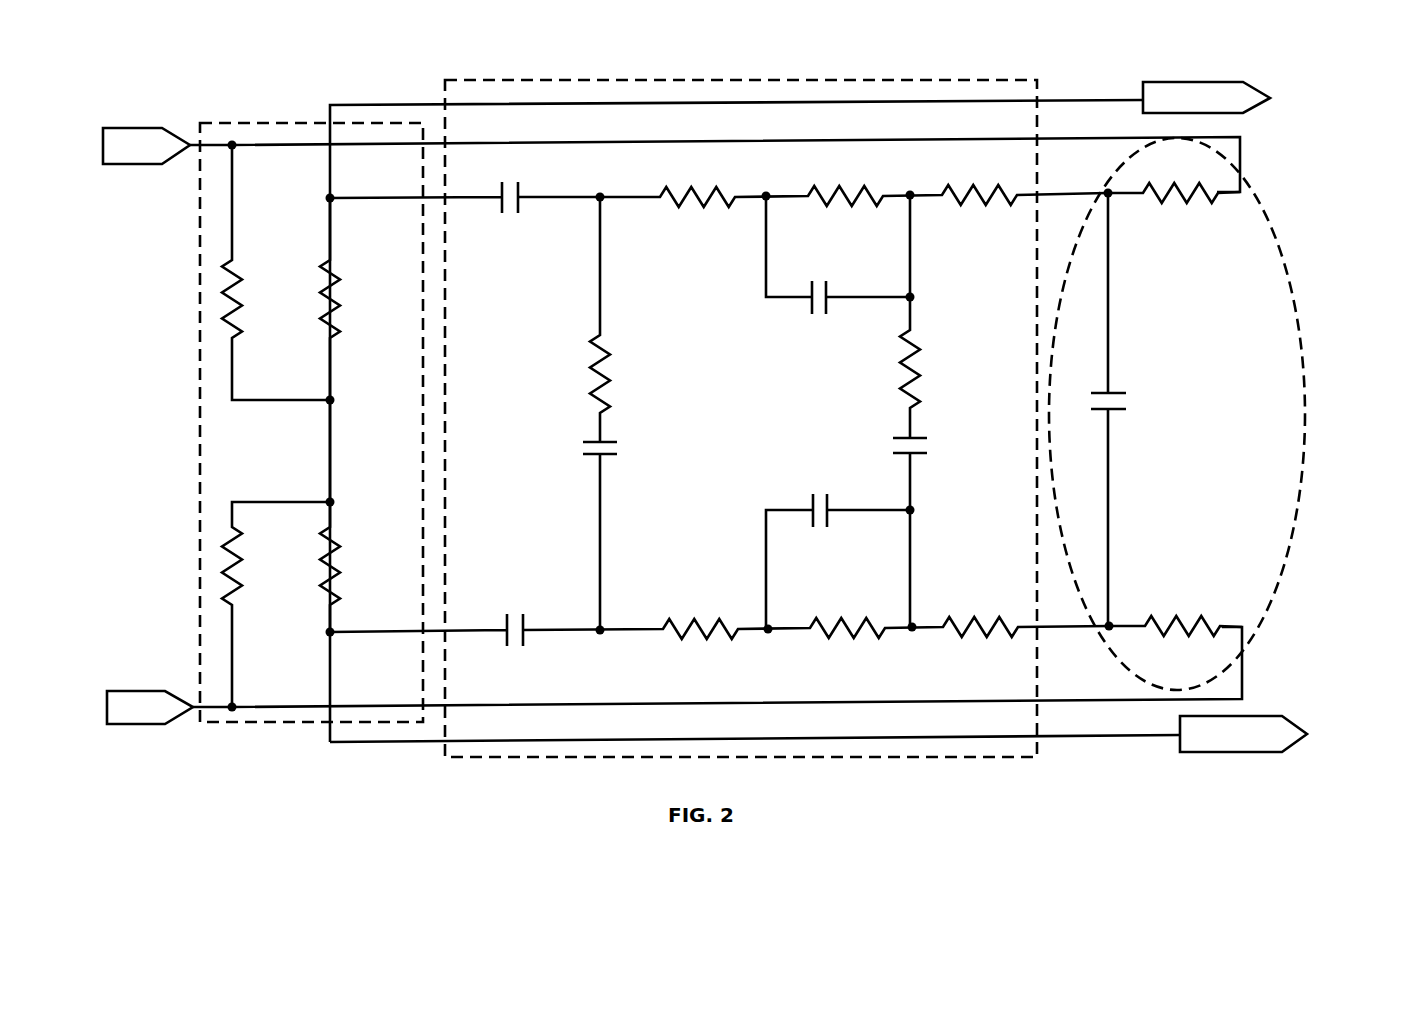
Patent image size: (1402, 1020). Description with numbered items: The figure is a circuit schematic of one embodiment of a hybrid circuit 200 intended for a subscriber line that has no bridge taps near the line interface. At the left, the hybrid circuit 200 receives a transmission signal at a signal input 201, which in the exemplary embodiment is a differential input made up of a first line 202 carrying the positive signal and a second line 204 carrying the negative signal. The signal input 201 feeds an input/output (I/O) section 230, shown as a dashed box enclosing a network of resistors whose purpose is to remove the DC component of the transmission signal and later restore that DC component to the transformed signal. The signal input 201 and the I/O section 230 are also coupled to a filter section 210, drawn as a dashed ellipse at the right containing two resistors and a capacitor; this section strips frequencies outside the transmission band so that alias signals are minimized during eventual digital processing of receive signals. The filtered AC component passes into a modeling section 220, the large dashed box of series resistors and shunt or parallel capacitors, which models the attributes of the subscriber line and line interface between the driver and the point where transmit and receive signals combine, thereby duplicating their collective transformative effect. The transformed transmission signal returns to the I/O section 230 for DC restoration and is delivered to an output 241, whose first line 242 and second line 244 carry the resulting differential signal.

The hybrid circuit 200 is at (256, 803).
The signal input 201 is at (152, 374).
The first line 202 is at (150, 128).
The second line 204 is at (133, 725).
The filter section 210 is at (1281, 241).
The modeling section 220 is at (703, 82).
The input/output (I/O) section 230 is at (238, 123).
The output 241 is at (1298, 298).
The first line 242 is at (1061, 100).
The second line 244 is at (1225, 752).